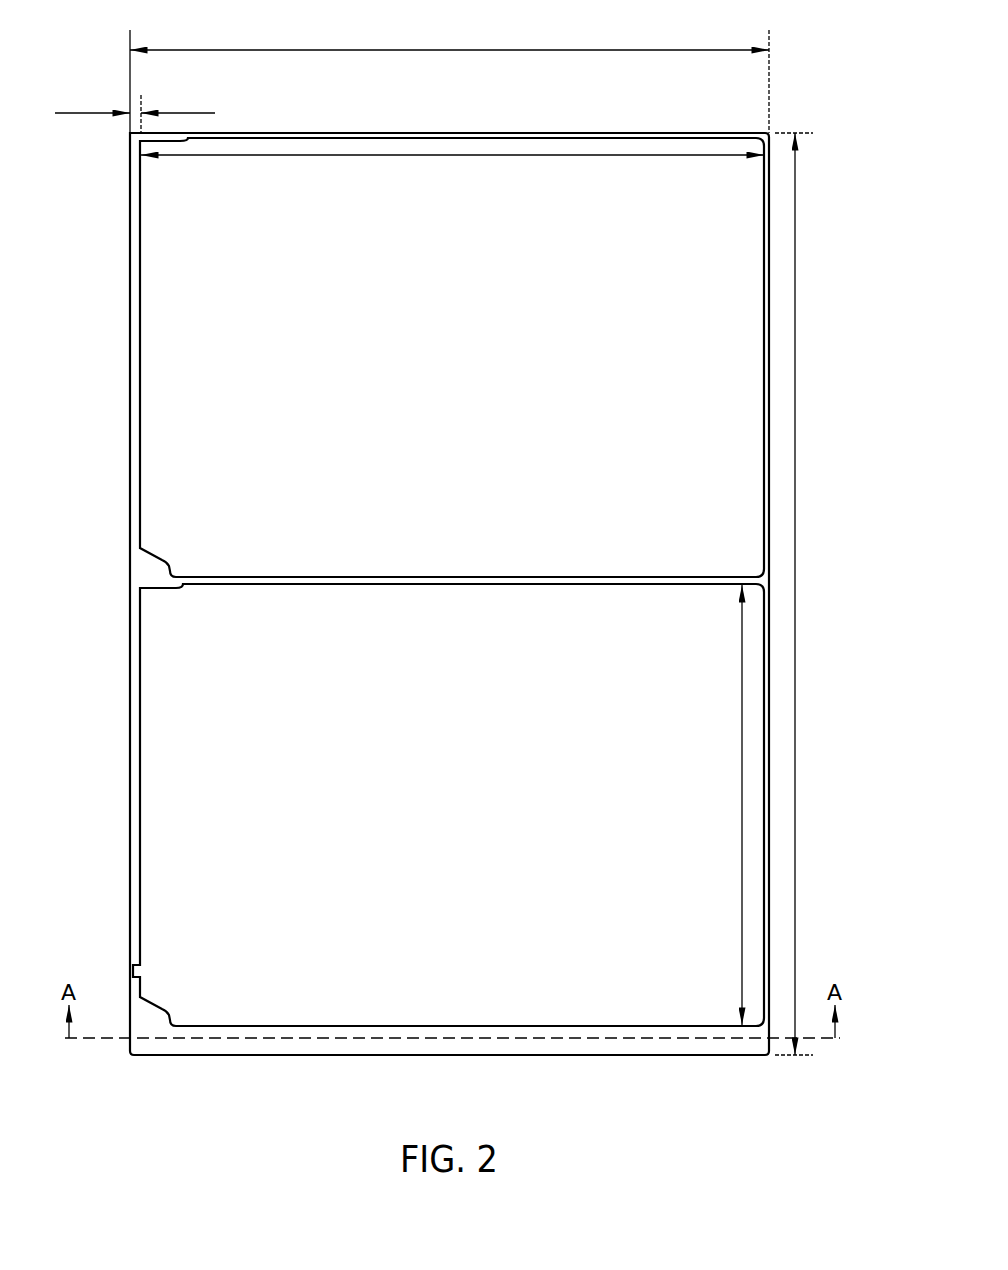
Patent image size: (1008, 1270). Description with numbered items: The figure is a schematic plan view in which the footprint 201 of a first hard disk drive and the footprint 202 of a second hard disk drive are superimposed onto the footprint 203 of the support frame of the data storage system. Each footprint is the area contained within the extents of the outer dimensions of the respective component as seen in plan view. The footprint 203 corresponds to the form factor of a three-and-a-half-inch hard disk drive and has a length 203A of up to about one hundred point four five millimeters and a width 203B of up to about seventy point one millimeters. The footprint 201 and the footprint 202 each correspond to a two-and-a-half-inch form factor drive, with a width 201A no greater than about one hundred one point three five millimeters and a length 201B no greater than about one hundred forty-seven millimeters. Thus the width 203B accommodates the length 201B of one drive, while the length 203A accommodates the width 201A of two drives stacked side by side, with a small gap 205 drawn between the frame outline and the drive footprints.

The footprint of HDD 101 201 is at (161, 555).
The footprint of HDD 102 202 is at (163, 590).
The footprint of support frame 203 is at (202, 1057).
The gap between frame and panel 205 is at (178, 112).
The width 201A is at (742, 680).
The length 201B is at (405, 155).
The length 203A is at (795, 655).
The width 203B is at (393, 50).